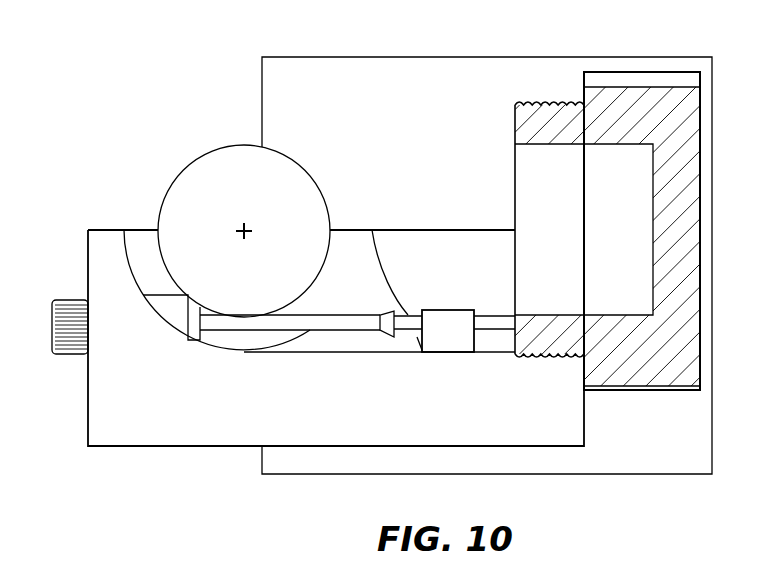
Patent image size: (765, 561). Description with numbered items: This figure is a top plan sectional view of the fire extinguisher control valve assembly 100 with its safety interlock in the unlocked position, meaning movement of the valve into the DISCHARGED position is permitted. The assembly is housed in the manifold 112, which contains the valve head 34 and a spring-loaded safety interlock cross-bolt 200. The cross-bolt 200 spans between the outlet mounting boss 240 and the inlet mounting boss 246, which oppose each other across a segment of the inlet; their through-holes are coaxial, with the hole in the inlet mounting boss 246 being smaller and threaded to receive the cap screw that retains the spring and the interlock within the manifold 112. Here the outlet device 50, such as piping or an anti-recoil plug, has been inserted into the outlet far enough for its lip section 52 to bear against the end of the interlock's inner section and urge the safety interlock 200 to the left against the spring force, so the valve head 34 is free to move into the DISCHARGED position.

The drug delivery device 100 is at (199, 57).
The manifold 112 is at (558, 476).
The valve head 34 is at (181, 166).
The inlet mounting boss 246 is at (168, 315).
The safety interlock cross-bolt 200 is at (352, 327).
The outlet mounting boss 240 is at (447, 310).
The outlet device 50 is at (637, 80).
The lip section 52 is at (515, 338).